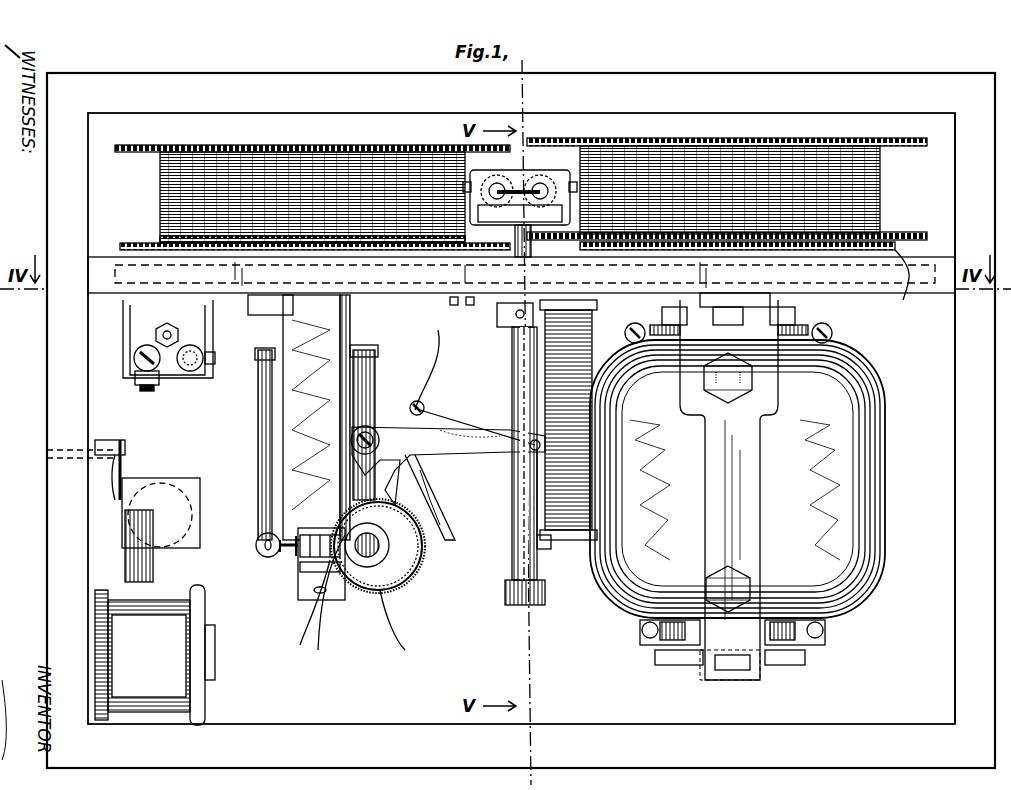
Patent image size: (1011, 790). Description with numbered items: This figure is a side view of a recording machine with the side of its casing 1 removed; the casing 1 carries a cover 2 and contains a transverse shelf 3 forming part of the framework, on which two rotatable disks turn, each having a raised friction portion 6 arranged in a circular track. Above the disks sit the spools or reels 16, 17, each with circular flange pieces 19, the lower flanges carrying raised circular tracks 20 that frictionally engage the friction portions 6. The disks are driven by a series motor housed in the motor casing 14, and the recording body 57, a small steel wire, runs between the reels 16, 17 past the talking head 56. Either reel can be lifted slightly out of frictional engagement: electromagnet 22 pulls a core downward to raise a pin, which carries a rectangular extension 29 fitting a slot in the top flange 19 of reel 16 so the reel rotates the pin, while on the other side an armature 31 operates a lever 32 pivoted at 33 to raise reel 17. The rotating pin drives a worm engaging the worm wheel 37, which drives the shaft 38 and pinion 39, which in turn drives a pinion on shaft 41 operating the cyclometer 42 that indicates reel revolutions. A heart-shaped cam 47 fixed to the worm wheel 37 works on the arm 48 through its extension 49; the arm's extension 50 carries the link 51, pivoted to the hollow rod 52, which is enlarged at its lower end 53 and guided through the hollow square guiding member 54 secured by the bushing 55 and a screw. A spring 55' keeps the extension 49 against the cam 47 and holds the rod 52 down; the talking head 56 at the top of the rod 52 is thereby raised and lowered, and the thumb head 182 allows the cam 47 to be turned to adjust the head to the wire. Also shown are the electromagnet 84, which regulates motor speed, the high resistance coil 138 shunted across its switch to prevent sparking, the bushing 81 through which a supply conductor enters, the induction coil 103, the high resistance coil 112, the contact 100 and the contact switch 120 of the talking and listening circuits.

The casing 1 is at (858, 727).
The cover 2 is at (968, 194).
The transverse shelf 3 is at (872, 292).
The raised portion 6 is at (903, 300).
The motor casing 14 is at (790, 565).
The spool or reel 16 is at (312, 184).
The spool or reel 17 is at (755, 184).
The circular flange pieces 19 is at (122, 152).
The raised circular tracks 20 is at (900, 246).
The electromagnet 22 is at (268, 490).
The rectangular extension 29 is at (310, 146).
The armature 31 is at (795, 665).
The lever 32 is at (732, 675).
The pivot 33 is at (700, 675).
The worm wheel 37 is at (395, 585).
The shaft 38 is at (256, 547).
The pinion 39 is at (276, 560).
The shaft 41 is at (300, 565).
The cyclometer 42 is at (352, 580).
The heart-shaped cam 47 is at (422, 560).
The arm 48 is at (448, 540).
The extension 49 is at (436, 520).
The extension 50 is at (450, 430).
The link 51 is at (545, 556).
The hollow rod 52 is at (512, 558).
The enlarged lower end 53 is at (525, 605).
The hollow square guiding member 54 is at (445, 392).
The bushing 55 is at (491, 312).
The spring 55' is at (480, 429).
The talking head 56 is at (520, 180).
The recording body 57 is at (558, 172).
The bushing 81 is at (155, 655).
The electromagnet 84 is at (138, 330).
The contact 100 is at (124, 448).
The induction coil 103 is at (175, 505).
The high resistance coil 112 is at (133, 575).
The contact switch 120 is at (130, 458).
The high resistance coil 138 is at (590, 326).
The thumb head 182 is at (385, 590).